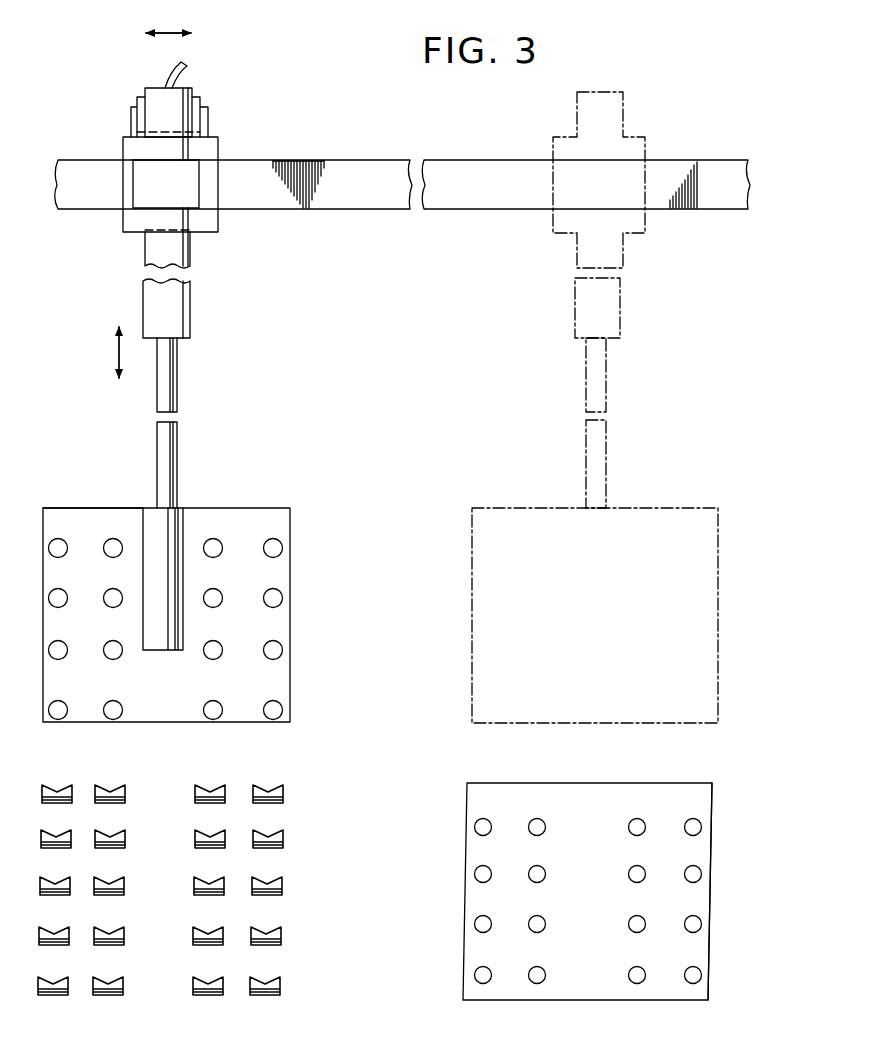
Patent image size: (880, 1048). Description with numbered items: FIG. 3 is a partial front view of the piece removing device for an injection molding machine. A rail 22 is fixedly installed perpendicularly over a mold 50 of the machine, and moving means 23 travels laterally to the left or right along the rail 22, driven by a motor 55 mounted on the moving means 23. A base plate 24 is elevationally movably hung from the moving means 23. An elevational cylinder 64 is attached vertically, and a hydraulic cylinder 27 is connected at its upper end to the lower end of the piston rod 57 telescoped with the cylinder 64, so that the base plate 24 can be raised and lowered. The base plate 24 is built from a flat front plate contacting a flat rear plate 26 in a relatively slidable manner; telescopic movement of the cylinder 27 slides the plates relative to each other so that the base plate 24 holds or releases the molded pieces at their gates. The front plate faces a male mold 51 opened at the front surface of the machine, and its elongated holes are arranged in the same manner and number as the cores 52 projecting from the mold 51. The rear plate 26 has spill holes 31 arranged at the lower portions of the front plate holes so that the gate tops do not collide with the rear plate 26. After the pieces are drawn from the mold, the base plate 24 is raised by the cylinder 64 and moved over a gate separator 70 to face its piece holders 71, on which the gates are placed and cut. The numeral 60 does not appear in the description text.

The rail 22 is at (342, 202).
The moving means 23 is at (210, 218).
The base plate 24 is at (292, 573).
The rear plate 26 is at (87, 517).
The hydraulic cylinder 27 is at (189, 531).
The spill holes 31 is at (217, 598).
The mold 50 is at (715, 854).
The male mold 51 is at (703, 863).
The cores 52 is at (695, 923).
The motor 55 is at (198, 103).
The piston rod 57 is at (173, 477).
The carriage assembly 60 is at (366, 148).
The elevational cylinder 64 is at (186, 312).
The gate separator 70 is at (289, 859).
The piece holders 71 is at (260, 881).